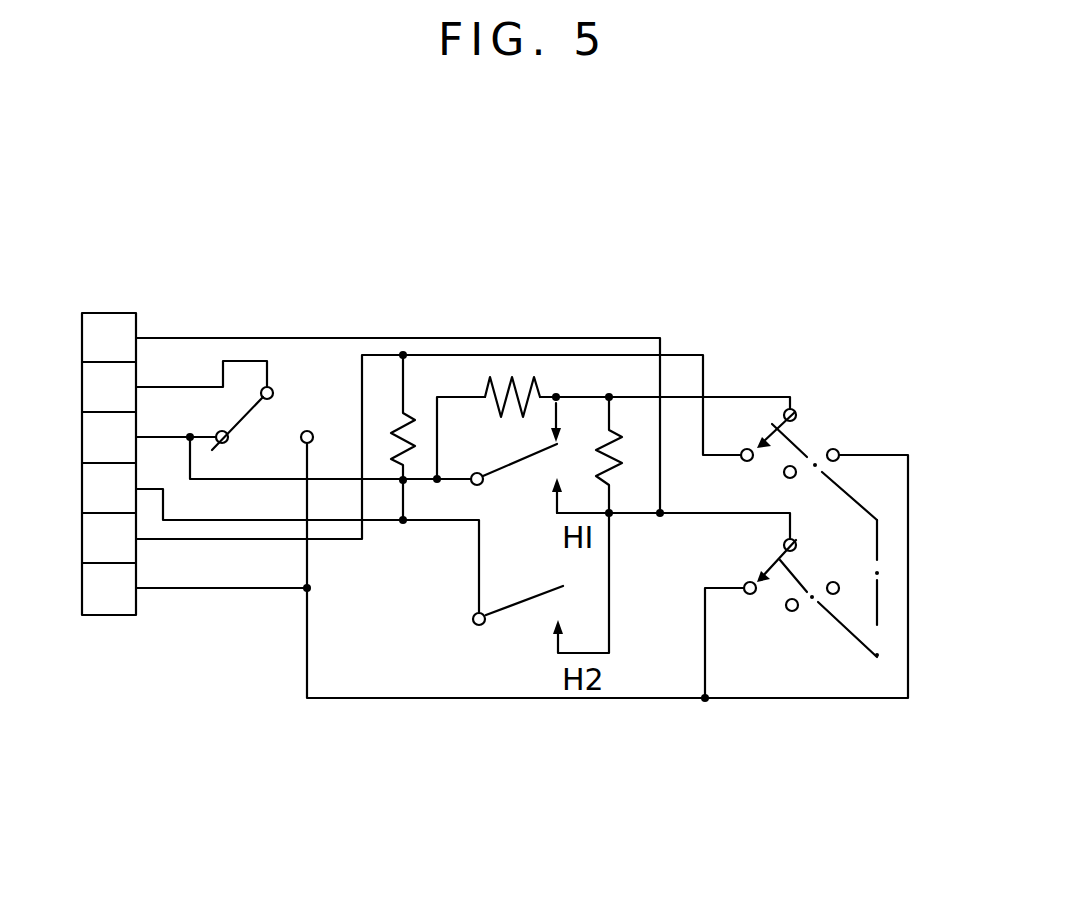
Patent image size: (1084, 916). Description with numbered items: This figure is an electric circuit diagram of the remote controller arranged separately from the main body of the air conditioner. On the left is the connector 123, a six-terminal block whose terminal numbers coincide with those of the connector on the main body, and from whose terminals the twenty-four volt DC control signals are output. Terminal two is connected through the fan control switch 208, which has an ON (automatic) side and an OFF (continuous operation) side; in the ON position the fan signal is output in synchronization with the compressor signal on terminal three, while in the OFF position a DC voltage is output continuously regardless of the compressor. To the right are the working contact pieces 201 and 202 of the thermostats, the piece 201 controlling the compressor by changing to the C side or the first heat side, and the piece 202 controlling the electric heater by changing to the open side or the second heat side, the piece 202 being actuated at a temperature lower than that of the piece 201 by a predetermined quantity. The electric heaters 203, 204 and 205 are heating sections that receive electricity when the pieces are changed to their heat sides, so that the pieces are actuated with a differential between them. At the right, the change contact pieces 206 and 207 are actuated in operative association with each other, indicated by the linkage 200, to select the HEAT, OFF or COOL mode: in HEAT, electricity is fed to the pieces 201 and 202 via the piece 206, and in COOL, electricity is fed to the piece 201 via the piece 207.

The connector 123 is at (110, 313).
The mode switch linkage 200 is at (883, 667).
The working contact piece 201 is at (497, 470).
The working contact piece 202 is at (517, 607).
The electric heater 203 is at (394, 412).
The electric heater 204 is at (508, 380).
The electric heater 205 is at (628, 445).
The change contact piece 206 is at (777, 563).
The change contact piece 207 is at (783, 433).
The fan control switch 208 is at (250, 411).